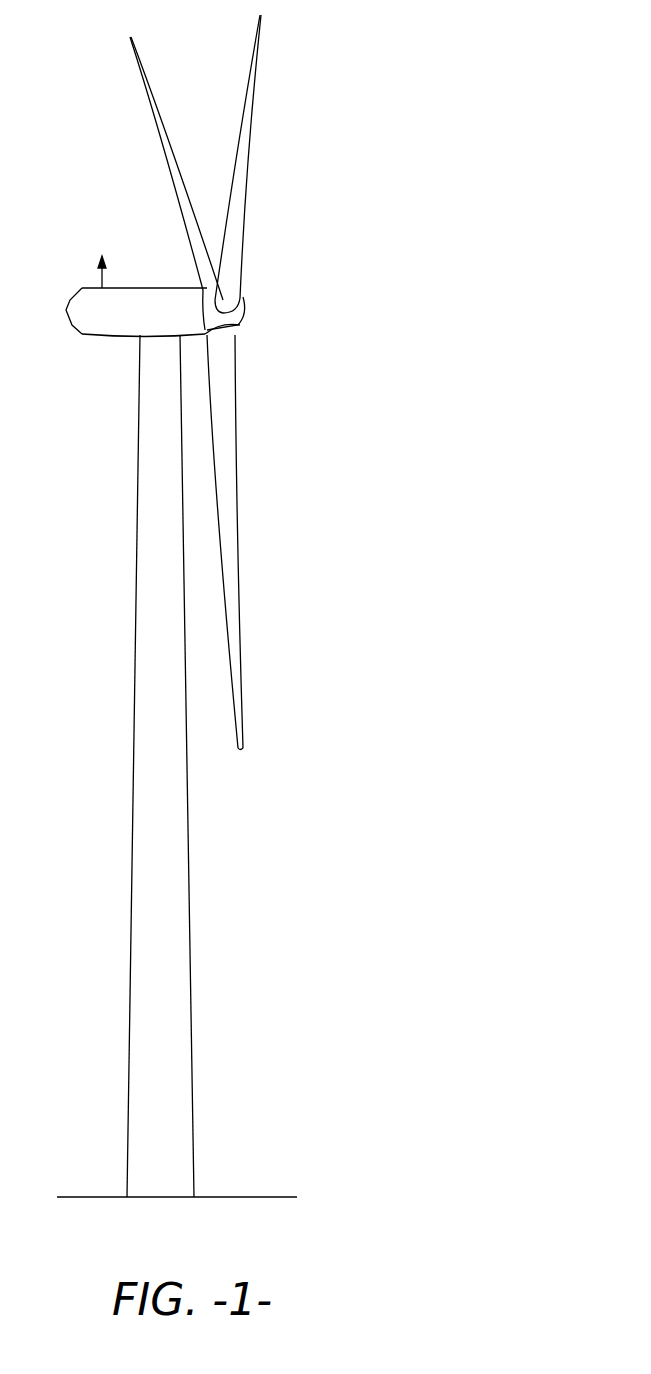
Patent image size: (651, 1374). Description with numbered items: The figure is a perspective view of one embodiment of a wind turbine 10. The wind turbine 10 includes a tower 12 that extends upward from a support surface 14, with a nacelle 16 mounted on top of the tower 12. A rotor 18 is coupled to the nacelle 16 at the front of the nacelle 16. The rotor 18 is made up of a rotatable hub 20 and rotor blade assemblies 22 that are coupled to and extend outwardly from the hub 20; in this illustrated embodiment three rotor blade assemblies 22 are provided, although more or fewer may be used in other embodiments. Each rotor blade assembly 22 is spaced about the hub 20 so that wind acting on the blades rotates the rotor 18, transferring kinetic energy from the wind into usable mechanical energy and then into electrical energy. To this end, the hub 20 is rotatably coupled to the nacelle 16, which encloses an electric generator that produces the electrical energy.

The wind turbine 10 is at (402, 117).
The tower 12 is at (170, 827).
The support surface 14 is at (110, 1197).
The nacelle 16 is at (103, 322).
The rotor 18 is at (250, 290).
The rotatable hub 20 is at (243, 310).
The rotor blade assembly 22 is at (157, 94).